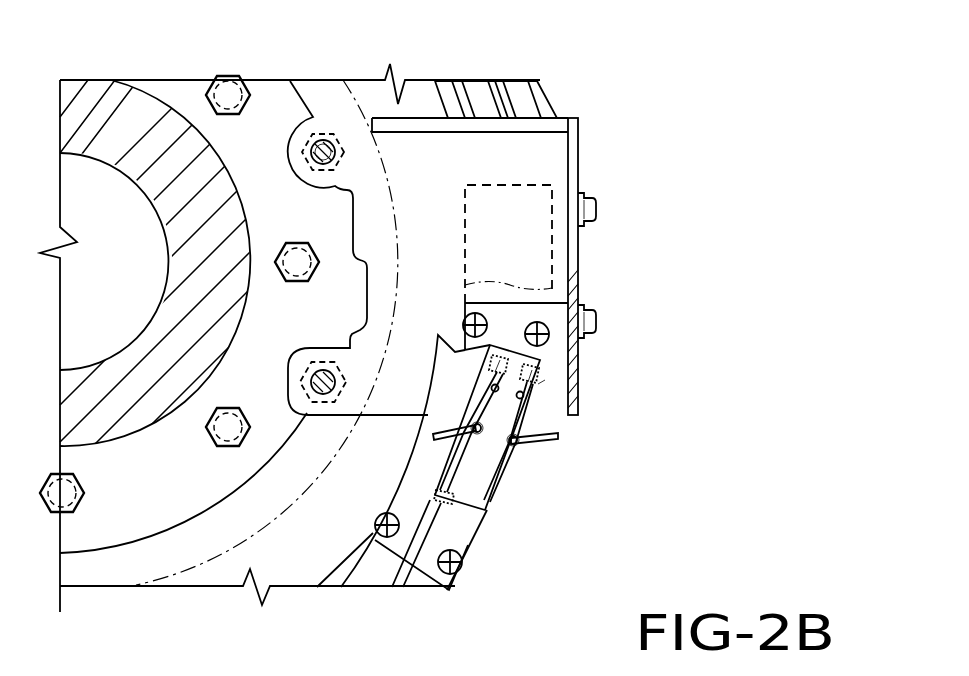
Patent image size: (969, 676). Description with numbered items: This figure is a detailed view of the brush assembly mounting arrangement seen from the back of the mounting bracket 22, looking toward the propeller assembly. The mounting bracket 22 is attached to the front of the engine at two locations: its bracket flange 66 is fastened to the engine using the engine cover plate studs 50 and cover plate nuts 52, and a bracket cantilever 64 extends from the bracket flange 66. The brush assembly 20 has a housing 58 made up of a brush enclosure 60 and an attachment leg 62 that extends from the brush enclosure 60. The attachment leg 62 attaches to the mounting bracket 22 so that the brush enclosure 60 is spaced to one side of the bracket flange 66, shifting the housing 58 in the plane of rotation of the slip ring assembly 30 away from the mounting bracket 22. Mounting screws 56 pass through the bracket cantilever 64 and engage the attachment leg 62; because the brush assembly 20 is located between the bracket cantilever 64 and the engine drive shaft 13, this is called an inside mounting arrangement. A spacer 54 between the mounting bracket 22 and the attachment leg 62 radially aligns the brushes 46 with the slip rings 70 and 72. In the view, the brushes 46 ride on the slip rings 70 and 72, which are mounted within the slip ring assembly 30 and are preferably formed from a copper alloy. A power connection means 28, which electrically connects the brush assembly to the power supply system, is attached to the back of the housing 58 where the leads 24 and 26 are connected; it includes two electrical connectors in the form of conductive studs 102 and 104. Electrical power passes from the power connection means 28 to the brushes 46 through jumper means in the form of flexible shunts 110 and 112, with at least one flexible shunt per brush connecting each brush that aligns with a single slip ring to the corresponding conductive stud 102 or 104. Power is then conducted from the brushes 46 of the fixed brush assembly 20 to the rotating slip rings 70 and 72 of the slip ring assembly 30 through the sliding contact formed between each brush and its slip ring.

The engine drive shaft 13 is at (130, 92).
The brush assembly 20 is at (505, 532).
The mounting bracket 22 is at (576, 114).
The lead 24 is at (435, 438).
The lead 26 is at (560, 436).
The power connection means 28 is at (525, 458).
The slip ring assembly 30 is at (552, 84).
The brushes 46 is at (488, 503).
The engine cover plate stud 50 is at (325, 142).
The cover plate nut 52 is at (304, 148).
The spacer 54 is at (576, 337).
The mounting screws 56 is at (597, 210).
The housing 58 is at (482, 510).
The brush enclosure 60 is at (500, 500).
The attachment leg 62 is at (460, 252).
The bracket cantilever 64 is at (578, 250).
The bracket flange 66 is at (560, 114).
The slip ring 70 is at (472, 92).
The slip ring 72 is at (508, 90).
The conductive stud 102 is at (506, 438).
The conductive stud 104 is at (518, 388).
The flexible shunt 110 is at (474, 424).
The flexible shunt 112 is at (538, 384).